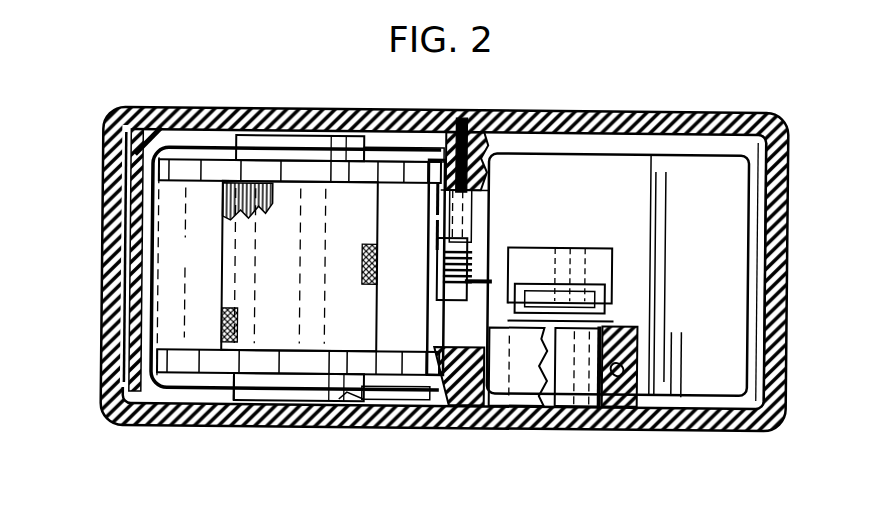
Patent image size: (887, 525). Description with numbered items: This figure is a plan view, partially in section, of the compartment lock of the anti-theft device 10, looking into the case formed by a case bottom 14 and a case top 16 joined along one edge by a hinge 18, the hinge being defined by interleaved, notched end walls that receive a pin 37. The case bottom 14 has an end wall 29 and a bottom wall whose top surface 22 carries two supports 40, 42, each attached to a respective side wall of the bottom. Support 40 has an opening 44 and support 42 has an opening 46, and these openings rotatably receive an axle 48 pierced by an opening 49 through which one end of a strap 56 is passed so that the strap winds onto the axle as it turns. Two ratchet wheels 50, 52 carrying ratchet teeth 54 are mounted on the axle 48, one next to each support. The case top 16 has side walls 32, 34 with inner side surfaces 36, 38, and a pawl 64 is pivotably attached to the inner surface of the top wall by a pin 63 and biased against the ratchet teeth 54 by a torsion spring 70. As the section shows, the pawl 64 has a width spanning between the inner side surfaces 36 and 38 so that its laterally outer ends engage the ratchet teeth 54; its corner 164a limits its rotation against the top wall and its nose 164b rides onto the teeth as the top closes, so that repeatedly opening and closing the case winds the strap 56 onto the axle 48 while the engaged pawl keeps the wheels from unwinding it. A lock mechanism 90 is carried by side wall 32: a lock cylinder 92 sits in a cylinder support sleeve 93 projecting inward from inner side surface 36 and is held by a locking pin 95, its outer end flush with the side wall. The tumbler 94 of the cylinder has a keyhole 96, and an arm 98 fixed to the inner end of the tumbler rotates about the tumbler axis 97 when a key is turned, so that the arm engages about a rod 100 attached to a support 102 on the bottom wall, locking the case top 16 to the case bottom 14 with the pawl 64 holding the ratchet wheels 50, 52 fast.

The anti-theft device 10 is at (190, 86).
The case bottom 14 is at (736, 210).
The case top 16 is at (700, 112).
The hinge 18 is at (100, 272).
The top surface 22 is at (722, 332).
The end wall 29 is at (770, 268).
The side wall 32 is at (462, 406).
The side wall 34 is at (560, 108).
The inner side surface 36 is at (352, 402).
The pin 37 is at (122, 305).
The inner side surface 38 is at (486, 130).
The support 40 is at (245, 406).
The support 42 is at (256, 142).
The opening 44 is at (292, 406).
The opening 46 is at (325, 150).
The axle 48 is at (226, 212).
The opening 49 is at (300, 245).
The ratchet wheel 50 is at (152, 376).
The ratchet wheel 52 is at (180, 158).
The ratchet teeth 54 is at (300, 165).
The strap 56 is at (372, 285).
The pin 63 is at (446, 122).
The pawl 64 is at (426, 312).
The torsion spring 70 is at (464, 260).
The lock mechanism 90 is at (632, 302).
The lock cylinder 92 is at (582, 390).
The cylinder support sleeve 93 is at (642, 330).
The tumbler 94 is at (640, 272).
The locking pin 95 is at (626, 368).
The keyhole 96 is at (572, 386).
The tumbler axis 97 is at (512, 400).
The arm 98 is at (600, 300).
The rod 100 is at (570, 268).
The support 102 is at (537, 256).
The plate portion 164a is at (444, 226).
The plate portion 164b is at (440, 214).